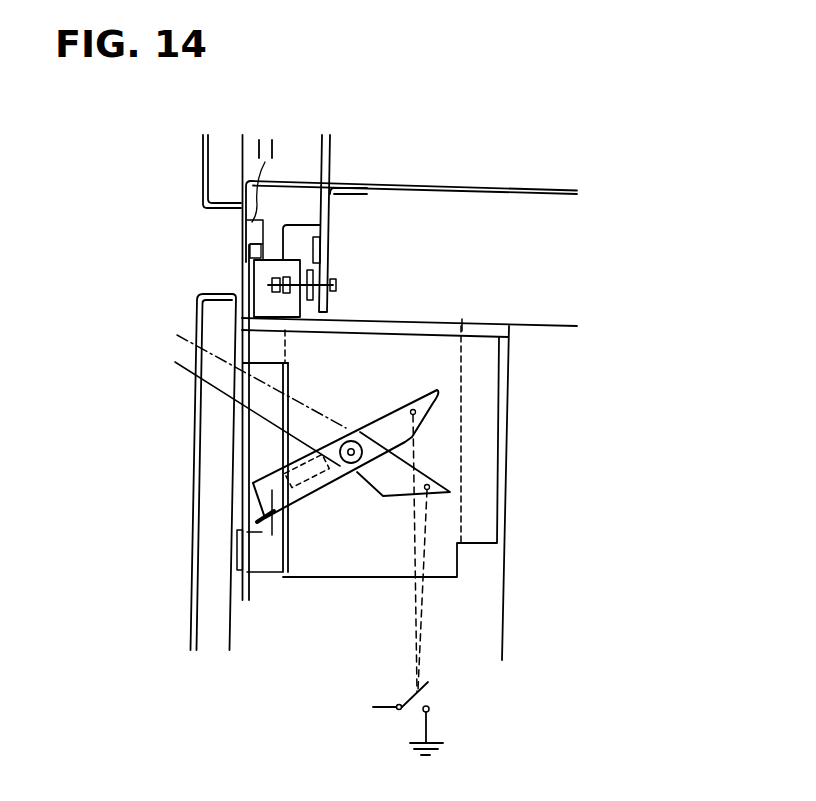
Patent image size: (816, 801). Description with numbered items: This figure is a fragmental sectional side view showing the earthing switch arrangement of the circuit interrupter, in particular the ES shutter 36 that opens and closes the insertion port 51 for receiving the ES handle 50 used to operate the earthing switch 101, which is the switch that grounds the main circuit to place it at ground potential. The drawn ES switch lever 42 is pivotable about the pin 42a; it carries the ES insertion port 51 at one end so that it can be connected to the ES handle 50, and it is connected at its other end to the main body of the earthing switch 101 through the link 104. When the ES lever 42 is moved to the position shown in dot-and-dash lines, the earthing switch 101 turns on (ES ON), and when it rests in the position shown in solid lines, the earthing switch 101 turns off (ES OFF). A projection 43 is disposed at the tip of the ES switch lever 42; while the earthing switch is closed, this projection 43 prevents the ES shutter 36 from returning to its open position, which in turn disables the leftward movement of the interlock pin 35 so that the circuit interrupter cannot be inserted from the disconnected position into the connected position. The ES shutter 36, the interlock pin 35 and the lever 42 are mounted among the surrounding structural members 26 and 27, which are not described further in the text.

The mounting bracket 26 is at (202, 151).
The frame member 27 is at (186, 552).
The interlock pin 35 is at (247, 238).
The ES shutter 36 is at (242, 442).
The ES switch lever 42 is at (357, 473).
The pin 42a is at (350, 441).
The projection 43 is at (272, 535).
The ES handle 50 is at (176, 341).
The ES insertion port 51 is at (254, 508).
The earthing switch 101 is at (387, 726).
The link 104 is at (425, 617).